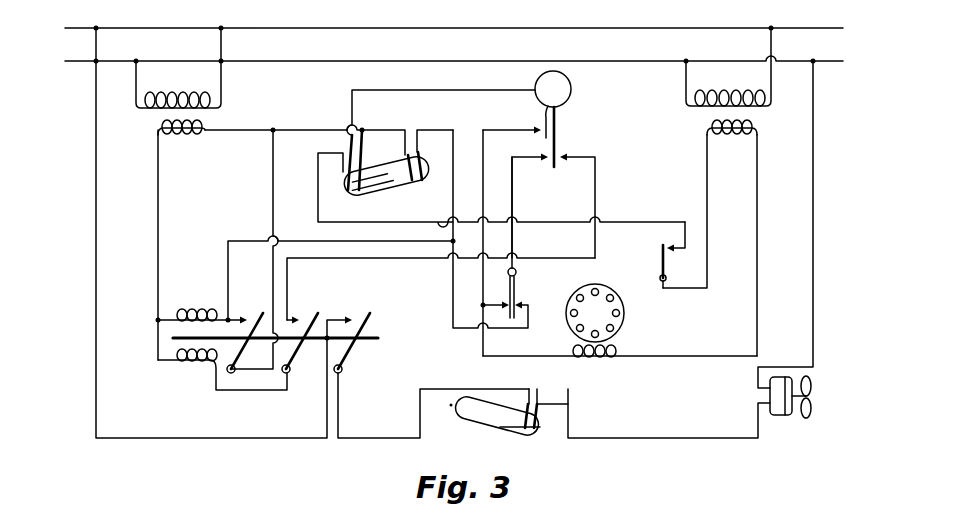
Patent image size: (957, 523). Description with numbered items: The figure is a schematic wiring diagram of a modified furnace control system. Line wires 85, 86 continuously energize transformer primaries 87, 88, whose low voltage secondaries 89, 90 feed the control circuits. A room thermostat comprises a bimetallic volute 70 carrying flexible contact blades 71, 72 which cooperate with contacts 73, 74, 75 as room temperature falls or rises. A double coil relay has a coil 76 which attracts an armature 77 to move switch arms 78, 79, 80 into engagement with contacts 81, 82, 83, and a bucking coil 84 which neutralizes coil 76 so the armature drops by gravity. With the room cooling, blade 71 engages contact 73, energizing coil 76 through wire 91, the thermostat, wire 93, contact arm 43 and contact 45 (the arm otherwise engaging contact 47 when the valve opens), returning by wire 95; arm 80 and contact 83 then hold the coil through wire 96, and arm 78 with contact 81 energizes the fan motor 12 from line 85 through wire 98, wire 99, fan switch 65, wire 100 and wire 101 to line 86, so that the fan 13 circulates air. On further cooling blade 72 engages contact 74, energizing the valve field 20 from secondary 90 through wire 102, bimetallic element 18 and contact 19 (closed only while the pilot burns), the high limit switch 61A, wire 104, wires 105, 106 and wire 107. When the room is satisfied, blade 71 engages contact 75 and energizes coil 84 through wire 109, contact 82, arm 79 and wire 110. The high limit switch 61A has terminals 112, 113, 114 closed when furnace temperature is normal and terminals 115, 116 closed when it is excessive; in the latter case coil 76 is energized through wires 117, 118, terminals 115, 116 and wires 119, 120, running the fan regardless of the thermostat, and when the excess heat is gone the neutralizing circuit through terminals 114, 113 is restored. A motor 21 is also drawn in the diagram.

The line wire 85 is at (459, 28).
The line wire 86 is at (459, 61).
The primary 87 is at (212, 94).
The primary 88 is at (703, 92).
The low voltage secondary 89 is at (175, 136).
The low voltage secondary 90 is at (717, 137).
The wire 91 is at (222, 130).
The wire 117 is at (286, 130).
The wire 118 is at (377, 130).
The wire 104 is at (444, 90).
The wire 95 is at (158, 232).
The wire 96 is at (273, 214).
The wire 120 is at (322, 241).
The wire 119 is at (447, 266).
The wire 105 is at (483, 206).
The wire 109 is at (540, 258).
The wire 93 is at (512, 200).
The contact 73 is at (544, 160).
The contact 74 is at (532, 133).
The contact 75 is at (564, 160).
The bimetallic volute 70 is at (571, 90).
The flexible contact blade 71 is at (557, 135).
The flexible contact blade 72 is at (543, 120).
The high limit switch 61A is at (410, 188).
The terminal 112 is at (340, 178).
The terminal 113 is at (344, 192).
The terminal 114 is at (368, 190).
The terminal 115 is at (408, 170).
The terminal 116 is at (414, 160).
The bimetallic element 18 is at (660, 268).
The contact 19 is at (672, 252).
The wire 102 is at (708, 222).
The wire 107 is at (758, 236).
The wire 101 is at (813, 176).
The contact arm 43 is at (518, 279).
The contact 45 is at (521, 304).
The contact 47 is at (505, 306).
The motor 21 is at (626, 318).
The wire 106 is at (536, 358).
The field 20 is at (597, 364).
The motor 12 is at (774, 377).
The fan 13 is at (810, 380).
The wire 100 is at (648, 437).
The wire 99 is at (355, 437).
The fan switch 65 is at (477, 416).
The coil 76 is at (186, 310).
The bucking coil 84 is at (157, 346).
The armature 77 is at (212, 372).
The wire 110 is at (231, 392).
The contact 83 is at (240, 318).
The switch arm 80 is at (247, 377).
The contact 82 is at (296, 316).
The switch arm 79 is at (298, 377).
The contact 81 is at (344, 316).
The switch arm 78 is at (372, 326).
The wire 98 is at (148, 438).